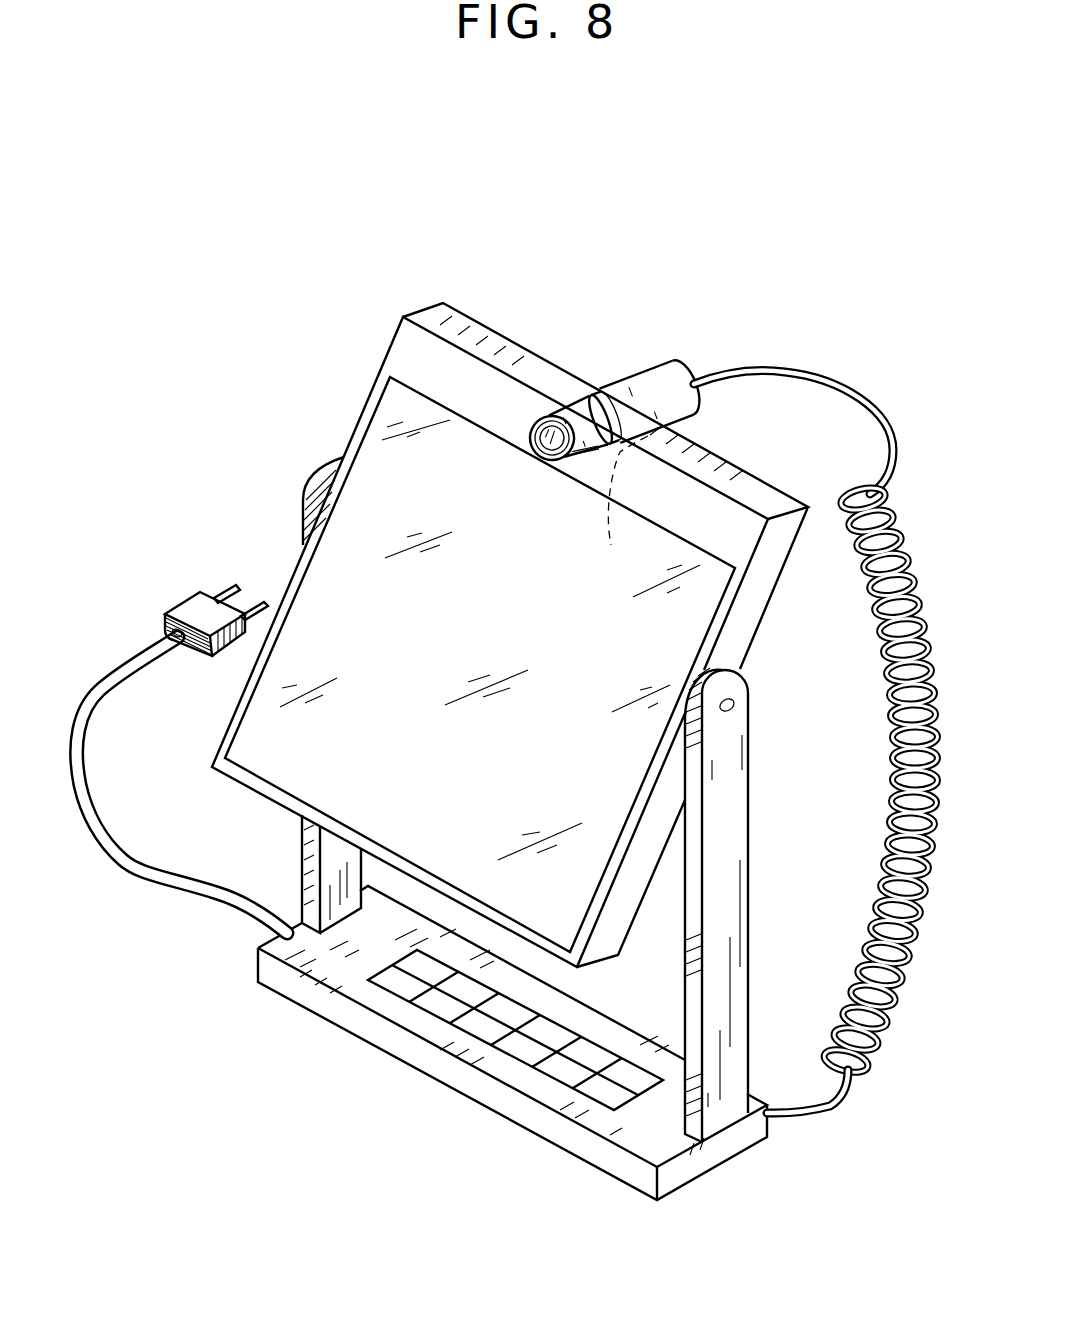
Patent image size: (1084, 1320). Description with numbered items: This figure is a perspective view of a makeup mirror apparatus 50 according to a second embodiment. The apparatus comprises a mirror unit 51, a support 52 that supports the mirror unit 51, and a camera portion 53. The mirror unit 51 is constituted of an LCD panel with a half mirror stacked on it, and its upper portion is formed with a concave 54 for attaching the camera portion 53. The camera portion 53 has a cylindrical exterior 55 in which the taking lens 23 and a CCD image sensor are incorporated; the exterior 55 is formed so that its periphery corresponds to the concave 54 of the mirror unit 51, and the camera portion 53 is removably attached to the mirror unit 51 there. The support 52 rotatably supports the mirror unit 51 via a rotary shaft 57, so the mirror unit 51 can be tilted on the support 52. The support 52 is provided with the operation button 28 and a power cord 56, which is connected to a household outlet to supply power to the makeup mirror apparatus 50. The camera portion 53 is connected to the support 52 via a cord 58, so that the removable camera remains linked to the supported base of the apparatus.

The makeup mirror apparatus 50 is at (518, 228).
The mirror unit 51 is at (343, 397).
The support 52 is at (426, 1108).
The camera portion 53 is at (644, 335).
The concave 54 is at (622, 507).
The cylindrical exterior 55 is at (690, 421).
The power cord 56 is at (147, 870).
The rotary shaft 57 is at (735, 705).
The cord 58 is at (882, 845).
The taking lens 23 is at (528, 450).
The operation button 28 is at (398, 987).